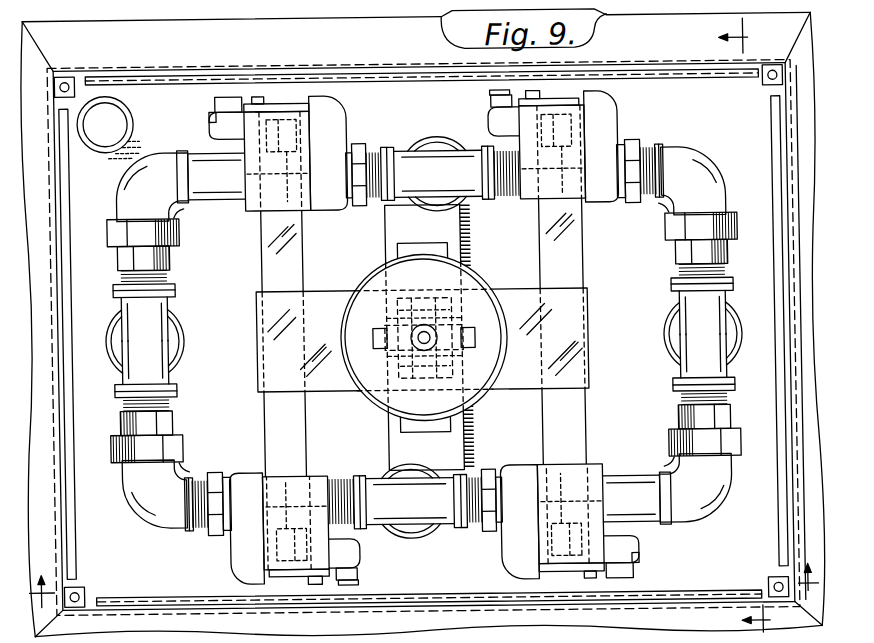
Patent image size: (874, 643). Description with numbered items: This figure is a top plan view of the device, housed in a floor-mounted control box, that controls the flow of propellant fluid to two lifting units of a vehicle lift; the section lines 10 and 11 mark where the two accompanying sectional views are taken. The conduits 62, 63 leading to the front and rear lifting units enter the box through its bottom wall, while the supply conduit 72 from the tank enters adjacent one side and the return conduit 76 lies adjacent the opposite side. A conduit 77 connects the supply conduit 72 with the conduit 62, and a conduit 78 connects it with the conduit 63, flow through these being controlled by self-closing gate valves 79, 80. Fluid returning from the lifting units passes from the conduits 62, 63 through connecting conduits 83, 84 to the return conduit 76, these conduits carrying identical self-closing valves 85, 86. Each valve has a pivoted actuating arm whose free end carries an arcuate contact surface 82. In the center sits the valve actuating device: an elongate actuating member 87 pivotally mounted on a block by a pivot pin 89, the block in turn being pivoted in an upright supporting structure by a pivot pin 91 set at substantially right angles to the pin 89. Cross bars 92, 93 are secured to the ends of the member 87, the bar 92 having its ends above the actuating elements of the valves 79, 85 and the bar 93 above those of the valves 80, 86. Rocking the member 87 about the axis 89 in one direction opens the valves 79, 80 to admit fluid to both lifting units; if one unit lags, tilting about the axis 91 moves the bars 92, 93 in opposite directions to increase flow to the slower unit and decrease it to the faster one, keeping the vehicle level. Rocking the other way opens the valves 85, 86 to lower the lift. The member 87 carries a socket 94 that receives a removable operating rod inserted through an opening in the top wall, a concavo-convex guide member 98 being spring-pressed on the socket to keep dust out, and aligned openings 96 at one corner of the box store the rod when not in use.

The section line 10- 10 is at (426, 594).
The section line 11- 11 is at (757, 322).
The conduit 62 is at (738, 327).
The conduit 63 is at (182, 341).
The supply conduit 72 is at (411, 535).
The return conduit 76 is at (452, 140).
The conduit 77 is at (649, 523).
The conduit 78 is at (144, 519).
The valve 79 is at (518, 483).
The valve 80 is at (246, 486).
The arcuate contact surface 82 is at (257, 190).
The connecting conduit 83 is at (672, 160).
The connecting conduit 84 is at (220, 185).
The valve 85 is at (601, 172).
The valve 86 is at (337, 207).
The actuating member 87 is at (326, 299).
The pivot pin 89 is at (468, 353).
The pivot pin 91 is at (424, 337).
The cross bar 92 is at (582, 420).
The cross bar 93 is at (300, 424).
The socket 94 is at (421, 332).
The aligned openings 96 is at (114, 114).
The concavo-convex guide member 98 is at (366, 627).